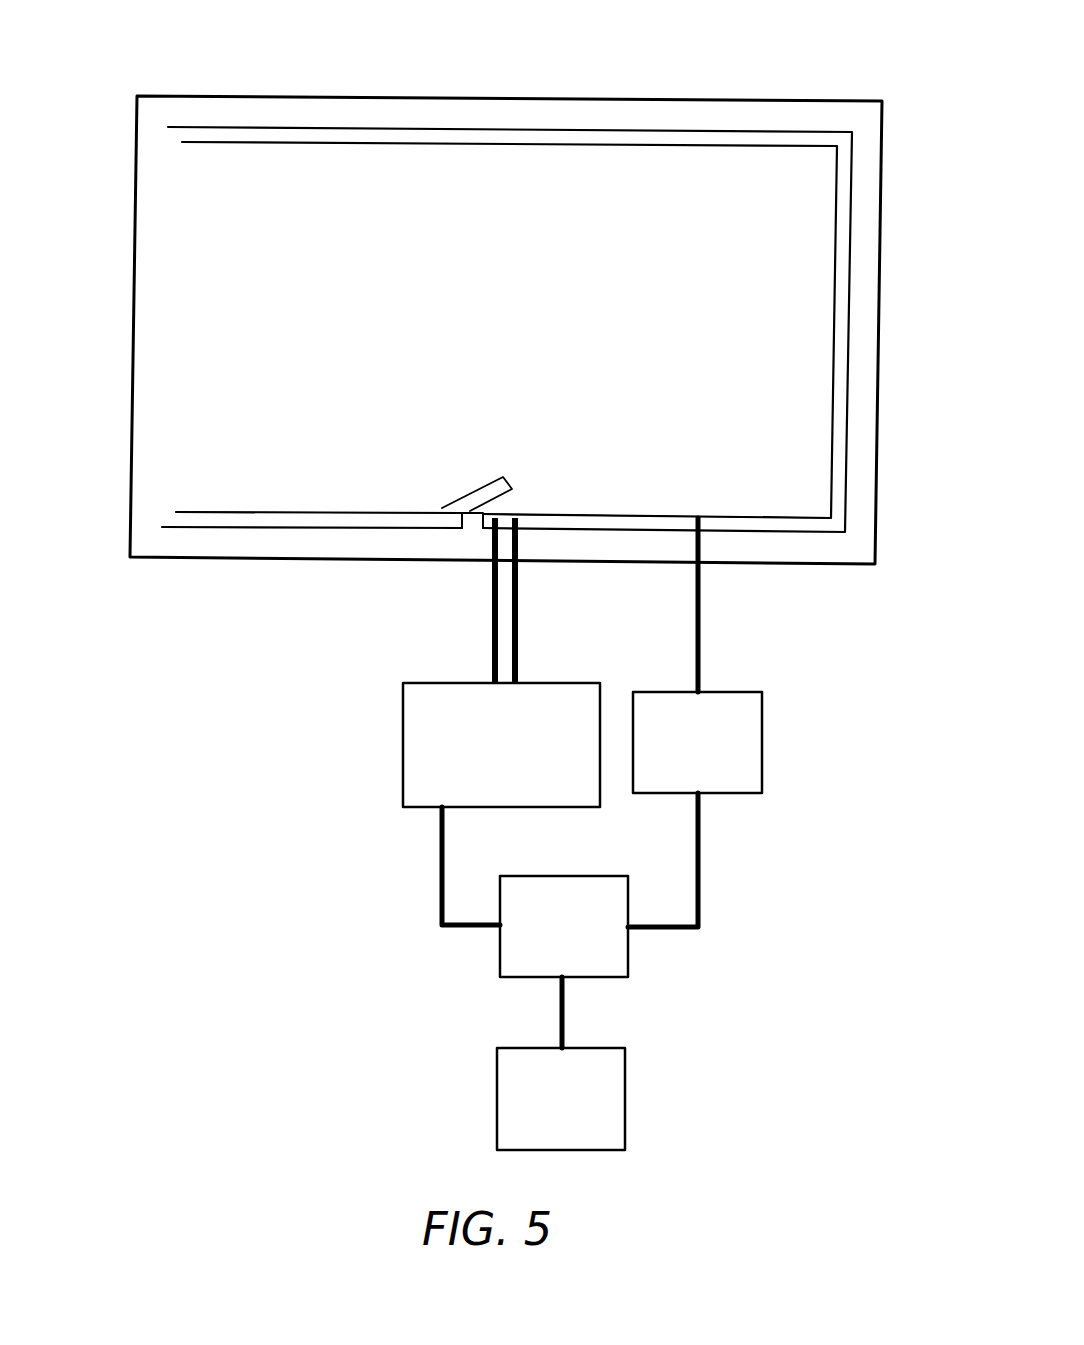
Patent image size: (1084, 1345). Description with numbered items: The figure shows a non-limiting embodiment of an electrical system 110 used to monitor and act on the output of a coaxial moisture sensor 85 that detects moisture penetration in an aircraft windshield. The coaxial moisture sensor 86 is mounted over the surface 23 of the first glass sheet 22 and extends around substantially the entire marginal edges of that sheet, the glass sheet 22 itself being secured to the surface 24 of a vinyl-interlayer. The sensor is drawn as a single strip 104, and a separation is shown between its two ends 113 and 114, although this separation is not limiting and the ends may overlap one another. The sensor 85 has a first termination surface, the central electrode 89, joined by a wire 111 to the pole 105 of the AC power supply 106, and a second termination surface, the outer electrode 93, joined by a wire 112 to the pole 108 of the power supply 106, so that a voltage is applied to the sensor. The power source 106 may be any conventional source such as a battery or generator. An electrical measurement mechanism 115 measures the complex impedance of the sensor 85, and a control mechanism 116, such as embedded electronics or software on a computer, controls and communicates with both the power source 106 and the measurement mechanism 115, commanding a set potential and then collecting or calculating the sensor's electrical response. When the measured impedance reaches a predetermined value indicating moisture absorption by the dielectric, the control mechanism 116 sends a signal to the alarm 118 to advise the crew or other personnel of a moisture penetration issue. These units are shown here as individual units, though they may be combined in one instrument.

The first glass sheet 22 is at (278, 96).
The surface of the first glass sheet 23 is at (543, 117).
The coaxial moisture sensor 86 is at (728, 140).
The moisture sensor 85 is at (818, 291).
The surface of the vinyl-interlayer 24 is at (198, 453).
The strip of the moisture sensor 104 is at (300, 519).
The end of the sensor 113 is at (466, 512).
The end of the sensor 114 is at (462, 523).
The central electrode 89 is at (492, 520).
The outer electrode 93 is at (518, 521).
The wire 111 is at (492, 625).
The wire 112 is at (518, 625).
The pole of the AC power supply 105 is at (492, 683).
The pole of the AC power supply 108 is at (517, 683).
The AC power supply 106 is at (403, 745).
The electrical measurement mechanism 115 is at (762, 748).
The control mechanism 116 is at (628, 953).
The alarm 118 is at (625, 1103).
The electrical system 110 is at (266, 959).